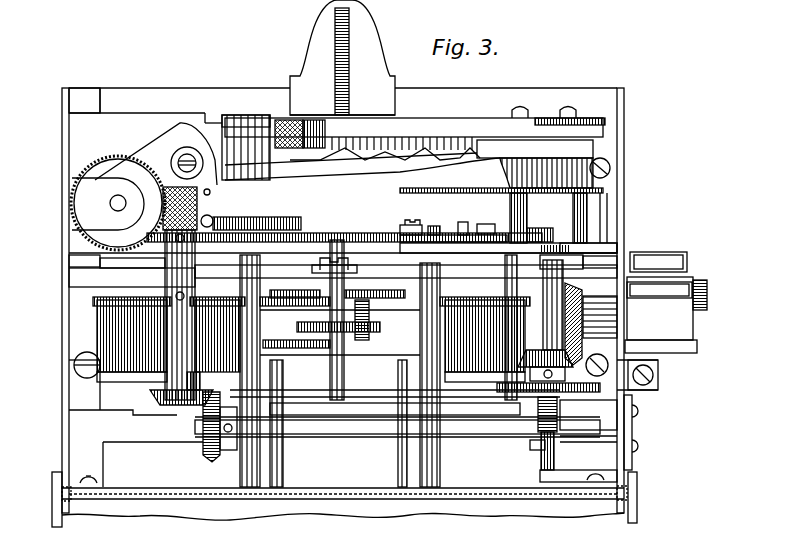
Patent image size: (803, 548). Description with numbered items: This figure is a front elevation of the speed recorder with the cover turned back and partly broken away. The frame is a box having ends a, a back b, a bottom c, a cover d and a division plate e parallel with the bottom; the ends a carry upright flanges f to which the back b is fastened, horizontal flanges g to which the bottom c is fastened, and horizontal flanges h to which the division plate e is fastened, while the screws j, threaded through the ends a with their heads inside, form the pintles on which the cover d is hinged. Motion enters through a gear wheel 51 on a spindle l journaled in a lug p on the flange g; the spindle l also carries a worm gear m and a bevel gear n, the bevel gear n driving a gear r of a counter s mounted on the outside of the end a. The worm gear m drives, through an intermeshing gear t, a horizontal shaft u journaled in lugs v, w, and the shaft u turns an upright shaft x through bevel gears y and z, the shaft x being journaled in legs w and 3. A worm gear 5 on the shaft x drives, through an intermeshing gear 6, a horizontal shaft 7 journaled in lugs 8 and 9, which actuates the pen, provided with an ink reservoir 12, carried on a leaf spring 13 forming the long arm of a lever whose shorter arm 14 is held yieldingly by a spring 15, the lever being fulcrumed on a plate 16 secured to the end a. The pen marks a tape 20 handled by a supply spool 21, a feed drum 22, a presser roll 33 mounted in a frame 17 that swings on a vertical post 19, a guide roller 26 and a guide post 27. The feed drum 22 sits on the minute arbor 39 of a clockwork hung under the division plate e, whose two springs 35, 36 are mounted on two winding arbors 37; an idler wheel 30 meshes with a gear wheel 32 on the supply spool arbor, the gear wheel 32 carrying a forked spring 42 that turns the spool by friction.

The leg 3 is at (343, 260).
The worm gear 5 is at (193, 208).
The intermeshing gear 6 is at (118, 203).
The horizontal shaft 7 is at (124, 209).
The lug 8 is at (108, 204).
The lug 9 is at (85, 483).
The ink reservoir 12 is at (543, 164).
The leaf spring 13 is at (362, 169).
The shorter arm 14 is at (176, 159).
The spring 15 is at (251, 214).
The plate 16 is at (158, 149).
The frame 17 is at (233, 113).
The vertical post 19 is at (260, 115).
The tape 20 is at (460, 128).
The supply spool 21 is at (495, 216).
The feed drum 22 is at (412, 120).
The guide roller 26 is at (605, 122).
The guide post 27 is at (528, 117).
The idler wheel 30 is at (453, 223).
The gear wheel 32 is at (545, 234).
The presser roll 33 is at (300, 145).
The spring 35 is at (485, 339).
The spring 36 is at (132, 339).
The winding arbor 37 is at (208, 315).
The minute arbor 39 is at (348, 260).
The forked spring 42 is at (490, 224).
The gear wheel 51 is at (525, 393).
The end a is at (62, 153).
The back b is at (498, 93).
The bottom c is at (305, 500).
The cover d is at (343, 528).
The division plate e is at (597, 247).
The upright flange f is at (69, 104).
The horizontal flange g is at (561, 262).
The horizontal flange h is at (75, 262).
The screw j is at (52, 494).
The spindle l is at (535, 284).
The worm gear m is at (530, 445).
The bevel gear n is at (528, 369).
The lug p is at (578, 477).
The gear r is at (580, 293).
The counter s is at (666, 321).
The intermeshing gear t is at (540, 452).
The horizontal shaft u is at (318, 437).
The lug v is at (588, 421).
The lug w is at (136, 448).
The upright shaft x is at (177, 412).
The bevel gear y is at (203, 452).
The bevel gear z is at (150, 392).